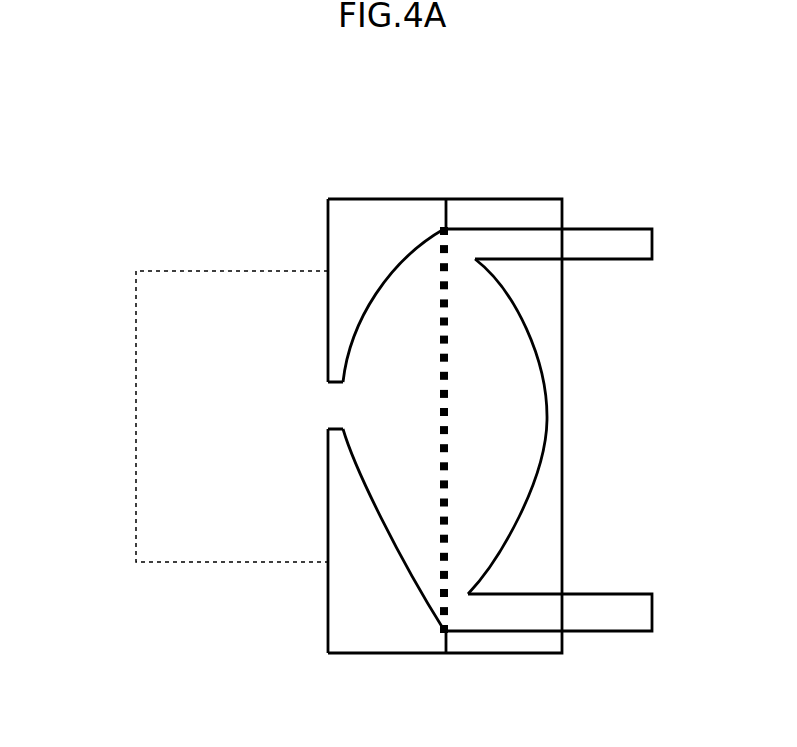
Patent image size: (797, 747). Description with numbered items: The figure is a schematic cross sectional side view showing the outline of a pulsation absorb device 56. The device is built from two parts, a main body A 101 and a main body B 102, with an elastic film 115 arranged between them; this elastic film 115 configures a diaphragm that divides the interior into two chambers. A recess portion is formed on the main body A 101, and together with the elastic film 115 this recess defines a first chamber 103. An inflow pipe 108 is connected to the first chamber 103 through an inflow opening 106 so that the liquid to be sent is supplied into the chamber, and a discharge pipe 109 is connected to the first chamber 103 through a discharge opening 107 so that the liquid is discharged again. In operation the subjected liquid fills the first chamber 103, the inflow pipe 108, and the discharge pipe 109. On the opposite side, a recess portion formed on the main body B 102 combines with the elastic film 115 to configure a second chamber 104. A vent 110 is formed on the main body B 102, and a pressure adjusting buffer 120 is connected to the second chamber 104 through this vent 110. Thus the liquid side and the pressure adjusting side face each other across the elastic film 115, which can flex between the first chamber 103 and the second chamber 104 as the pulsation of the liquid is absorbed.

The pulsation absorb device 56 is at (465, 88).
The main body A 101 is at (500, 208).
The main body B 102 is at (378, 220).
The first chamber 103 is at (483, 404).
The second chamber 104 is at (388, 472).
The inflow opening 106 is at (461, 611).
The discharge opening 107 is at (472, 249).
The inflow pipe 108 is at (608, 618).
The discharge pipe 109 is at (613, 250).
The vent 110 is at (340, 403).
The elastic film 115 is at (450, 445).
The pressure adjusting buffer 120 is at (177, 443).